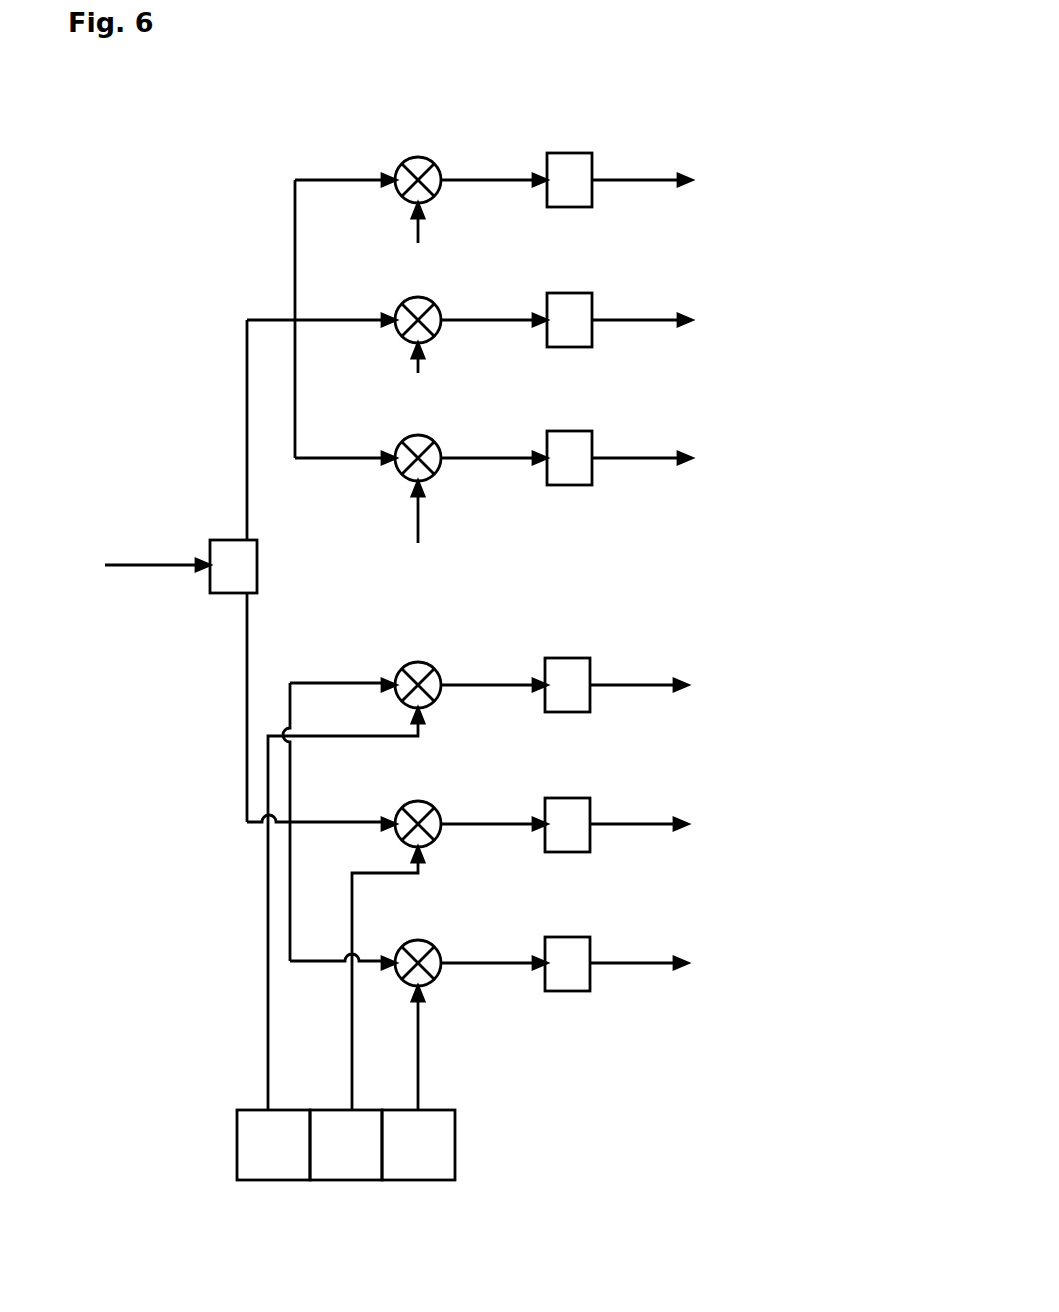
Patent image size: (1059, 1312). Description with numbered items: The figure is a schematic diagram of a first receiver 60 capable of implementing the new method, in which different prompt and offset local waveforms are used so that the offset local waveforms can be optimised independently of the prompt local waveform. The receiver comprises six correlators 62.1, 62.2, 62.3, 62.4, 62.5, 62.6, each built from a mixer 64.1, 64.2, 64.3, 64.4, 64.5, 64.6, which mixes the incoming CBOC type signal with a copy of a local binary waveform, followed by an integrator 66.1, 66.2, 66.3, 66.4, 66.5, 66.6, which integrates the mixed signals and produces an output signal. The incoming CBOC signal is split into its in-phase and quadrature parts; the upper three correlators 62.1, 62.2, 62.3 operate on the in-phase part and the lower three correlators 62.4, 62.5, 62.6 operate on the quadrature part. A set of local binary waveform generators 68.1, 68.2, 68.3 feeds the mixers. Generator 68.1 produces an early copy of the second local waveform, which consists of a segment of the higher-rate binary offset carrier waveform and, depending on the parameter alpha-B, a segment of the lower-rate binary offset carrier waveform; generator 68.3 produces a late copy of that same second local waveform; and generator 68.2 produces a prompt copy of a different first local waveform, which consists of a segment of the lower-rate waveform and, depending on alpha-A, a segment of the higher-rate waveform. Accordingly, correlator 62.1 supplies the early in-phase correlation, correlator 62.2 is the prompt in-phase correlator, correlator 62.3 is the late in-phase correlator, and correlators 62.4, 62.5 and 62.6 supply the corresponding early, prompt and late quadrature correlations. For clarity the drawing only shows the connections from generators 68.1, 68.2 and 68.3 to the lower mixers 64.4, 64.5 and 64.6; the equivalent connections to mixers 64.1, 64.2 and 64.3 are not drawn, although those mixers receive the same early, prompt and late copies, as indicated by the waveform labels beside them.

The first receiver 60 is at (204, 160).
The correlator 62.1 is at (633, 153).
The prompt correlator 62.2 is at (645, 298).
The late correlator 62.3 is at (688, 432).
The correlator 62.4 is at (628, 660).
The correlator 62.5 is at (637, 800).
The correlator 62.6 is at (630, 937).
The mixer 64.1 is at (410, 157).
The mixer 64.2 is at (403, 301).
The mixer 64.3 is at (412, 436).
The mixer 64.4 is at (415, 662).
The mixer 64.5 is at (410, 803).
The mixer 64.6 is at (410, 946).
The integrator 66.1 is at (577, 208).
The integrator 66.2 is at (575, 348).
The integrator 66.3 is at (575, 486).
The integrator 66.4 is at (573, 713).
The integrator 66.5 is at (573, 853).
The integrator 66.6 is at (573, 991).
The local binary waveform generator 68.1 is at (282, 1108).
The local binary waveform generator 68.2 is at (343, 1108).
The local binary waveform generator 68.3 is at (440, 1103).